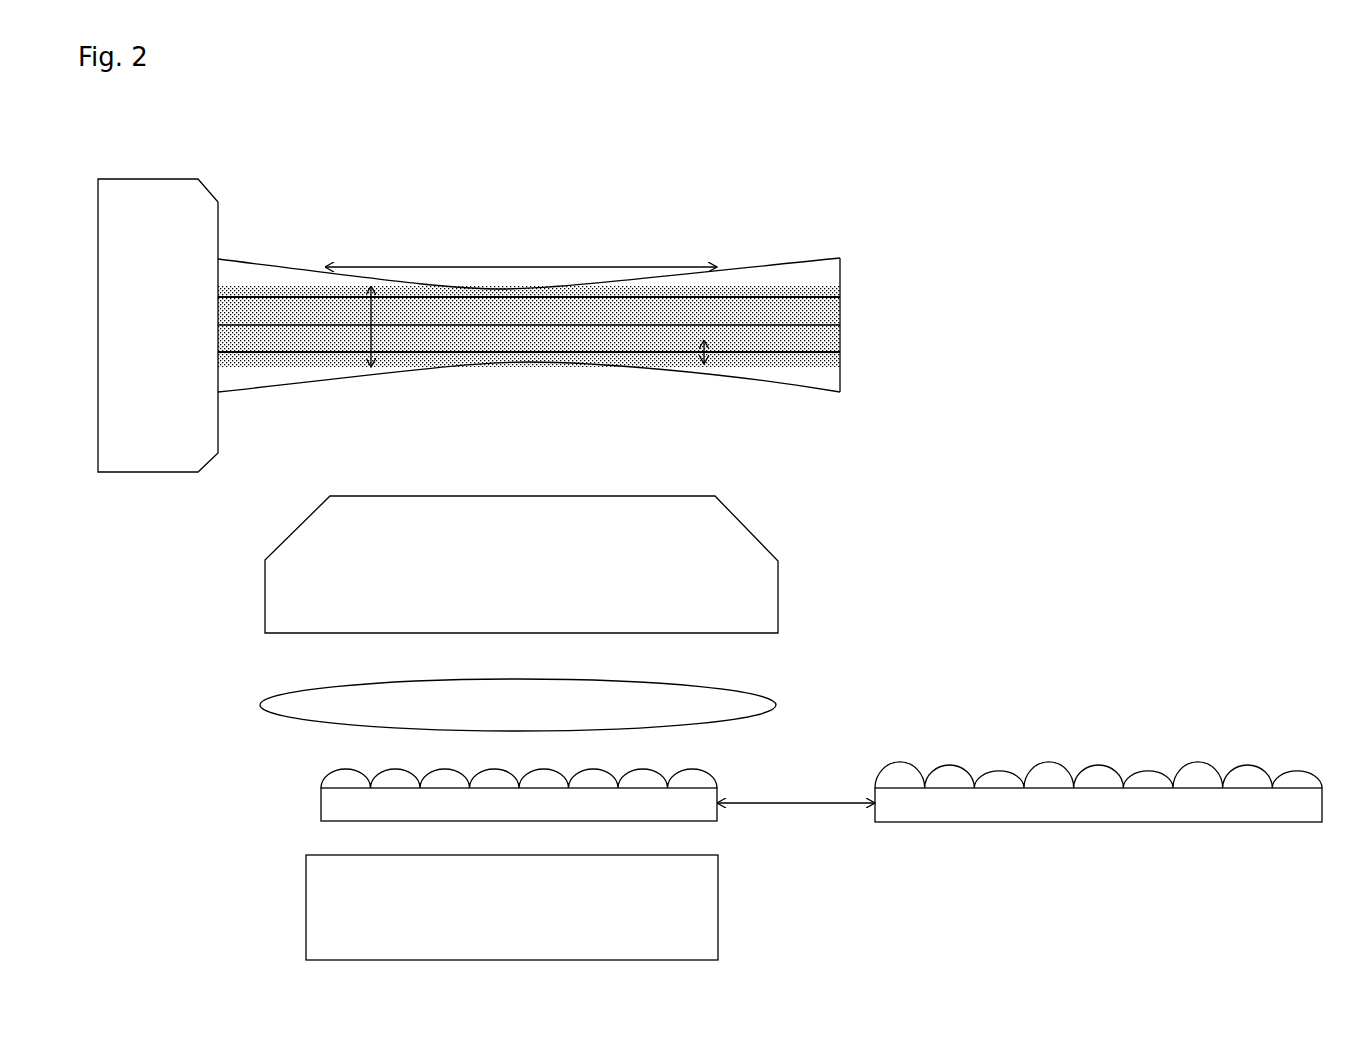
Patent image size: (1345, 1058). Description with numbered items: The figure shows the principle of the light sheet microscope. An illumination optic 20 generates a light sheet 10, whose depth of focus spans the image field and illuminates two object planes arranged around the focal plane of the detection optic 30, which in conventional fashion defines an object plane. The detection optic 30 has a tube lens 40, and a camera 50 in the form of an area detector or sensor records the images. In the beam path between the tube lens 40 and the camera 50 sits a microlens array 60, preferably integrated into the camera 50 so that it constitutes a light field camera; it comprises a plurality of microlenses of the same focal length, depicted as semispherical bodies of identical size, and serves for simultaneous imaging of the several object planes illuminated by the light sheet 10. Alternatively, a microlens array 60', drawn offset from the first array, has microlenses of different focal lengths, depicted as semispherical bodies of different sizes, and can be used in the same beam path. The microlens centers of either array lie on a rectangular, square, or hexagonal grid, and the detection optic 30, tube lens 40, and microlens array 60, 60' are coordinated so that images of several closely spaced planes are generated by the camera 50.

The light sheet 10 is at (810, 265).
The illumination optic 20 is at (200, 440).
The detection optic 30 is at (290, 558).
The tube lens 40 is at (263, 700).
The camera 50 is at (340, 890).
The microlens array 60 is at (475, 816).
The microlens array 60' is at (1071, 817).